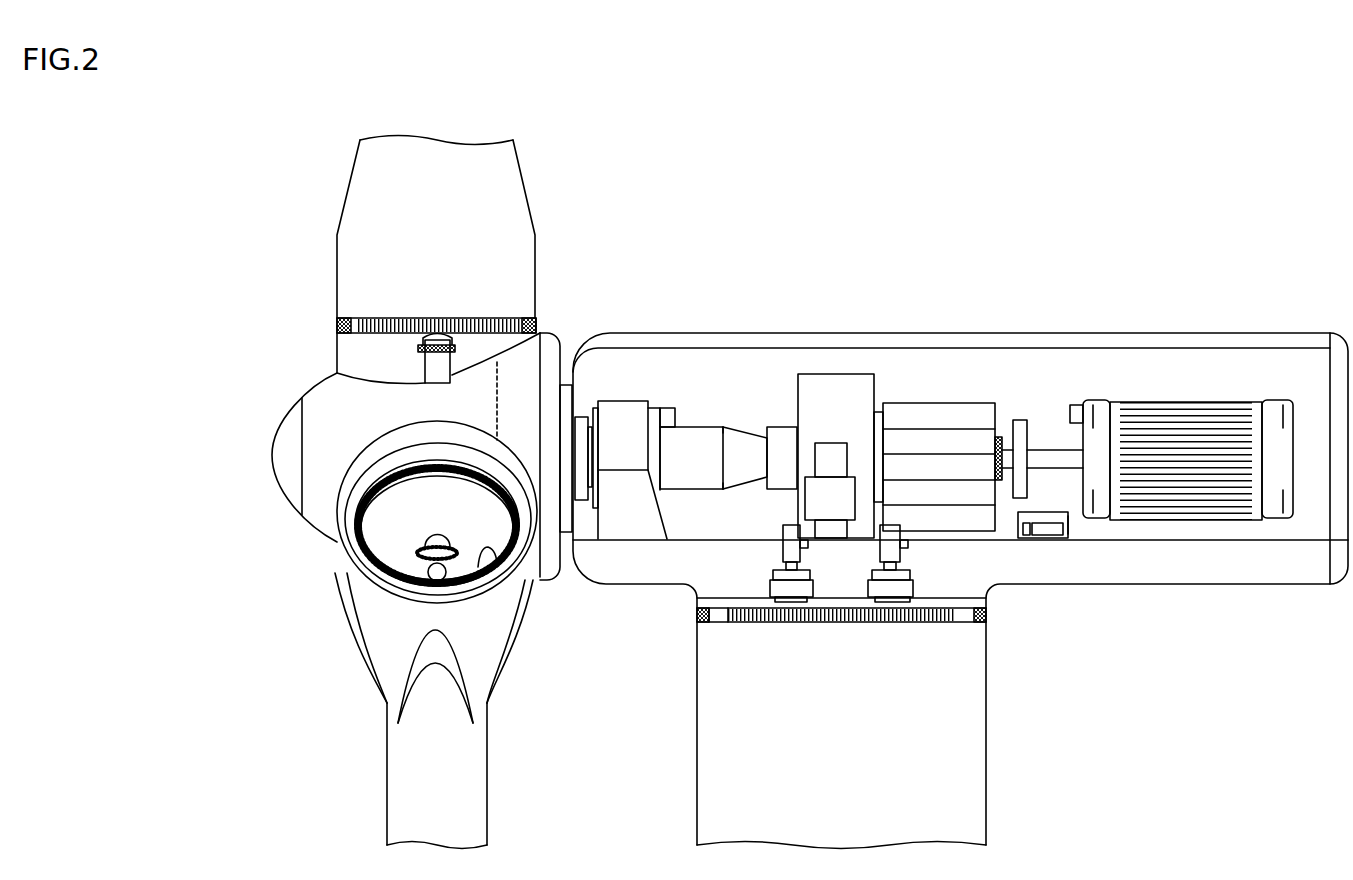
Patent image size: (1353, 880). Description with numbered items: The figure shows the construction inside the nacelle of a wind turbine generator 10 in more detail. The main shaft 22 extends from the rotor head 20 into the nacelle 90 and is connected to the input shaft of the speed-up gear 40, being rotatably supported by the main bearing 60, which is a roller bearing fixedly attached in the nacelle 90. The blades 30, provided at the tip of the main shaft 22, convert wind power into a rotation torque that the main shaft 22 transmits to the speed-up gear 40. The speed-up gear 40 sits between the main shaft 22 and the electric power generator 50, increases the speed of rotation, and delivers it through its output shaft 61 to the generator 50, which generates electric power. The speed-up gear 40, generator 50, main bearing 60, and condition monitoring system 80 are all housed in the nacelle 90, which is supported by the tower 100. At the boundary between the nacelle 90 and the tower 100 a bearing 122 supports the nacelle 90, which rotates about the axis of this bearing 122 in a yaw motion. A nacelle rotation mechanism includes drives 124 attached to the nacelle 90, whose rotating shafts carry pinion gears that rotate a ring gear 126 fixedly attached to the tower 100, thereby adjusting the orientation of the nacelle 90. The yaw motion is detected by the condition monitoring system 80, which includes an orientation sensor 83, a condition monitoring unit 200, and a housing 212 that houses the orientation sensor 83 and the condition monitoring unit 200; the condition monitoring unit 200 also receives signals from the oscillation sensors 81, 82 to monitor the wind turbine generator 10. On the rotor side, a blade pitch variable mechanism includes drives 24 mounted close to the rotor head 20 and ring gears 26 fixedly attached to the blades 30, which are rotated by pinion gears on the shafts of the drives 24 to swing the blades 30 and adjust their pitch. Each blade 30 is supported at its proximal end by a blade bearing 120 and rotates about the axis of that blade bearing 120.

The wind turbine generator 10 is at (1303, 198).
The rotor head 20 is at (323, 414).
The main shaft 22 is at (692, 450).
The drives for blade pitch change 24 is at (438, 365).
The ring gears 26 is at (478, 323).
The blades 30 is at (487, 193).
The speed-up gear 40 is at (885, 379).
The electric power generator 50 is at (1188, 427).
The main bearing 60 is at (625, 423).
The output shaft 61 is at (1037, 447).
The condition monitoring system 80 is at (1063, 542).
The oscillation sensor 81 is at (1070, 413).
The oscillation sensor 82 is at (663, 407).
The orientation sensor 83 is at (1025, 540).
The nacelle 90 is at (1102, 342).
The tower 100 is at (952, 762).
The blade bearing 120 is at (337, 325).
The bearing for supporting the nacelle 122 is at (697, 615).
The drives for changing the orientation of the nacelle 124 is at (780, 555).
The ring gear 126 is at (728, 615).
The condition monitoring unit 200 is at (1045, 540).
The housing 212 is at (1067, 525).